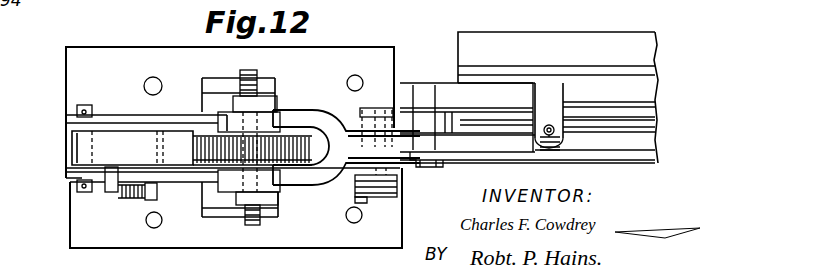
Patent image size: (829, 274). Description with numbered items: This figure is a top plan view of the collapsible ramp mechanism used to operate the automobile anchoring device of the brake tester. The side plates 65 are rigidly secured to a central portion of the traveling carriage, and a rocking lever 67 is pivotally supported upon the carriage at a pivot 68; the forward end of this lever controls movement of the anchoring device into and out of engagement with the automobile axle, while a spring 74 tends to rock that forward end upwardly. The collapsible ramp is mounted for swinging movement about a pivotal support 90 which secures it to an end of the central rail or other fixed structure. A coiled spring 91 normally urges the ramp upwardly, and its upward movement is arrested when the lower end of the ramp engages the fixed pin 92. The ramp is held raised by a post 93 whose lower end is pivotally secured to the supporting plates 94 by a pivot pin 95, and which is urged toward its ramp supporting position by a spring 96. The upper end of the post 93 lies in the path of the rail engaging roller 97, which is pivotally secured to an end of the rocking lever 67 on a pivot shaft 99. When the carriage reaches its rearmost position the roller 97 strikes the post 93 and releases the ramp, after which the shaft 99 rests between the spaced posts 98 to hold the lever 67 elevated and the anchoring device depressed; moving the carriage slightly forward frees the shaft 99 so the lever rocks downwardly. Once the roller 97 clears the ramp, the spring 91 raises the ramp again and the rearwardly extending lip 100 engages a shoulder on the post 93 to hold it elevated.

The side plate 65 is at (608, 113).
The rocking lever 67 is at (489, 150).
The pivot of rocking lever 68 is at (430, 160).
The spring 74 is at (566, 138).
The pivotal support 90 is at (402, 203).
The coiled spring 91 is at (357, 190).
The fixed pin 92 is at (387, 105).
The post 93 is at (105, 150).
The supporting plates 94 is at (137, 115).
The pivot pin 95 is at (88, 105).
The spring 96 is at (132, 200).
The rail engaging roller 97 is at (288, 135).
The spaced posts 98 is at (258, 79).
The pivot shaft 99 is at (252, 73).
The rearwardly extending lip 100 is at (445, 76).